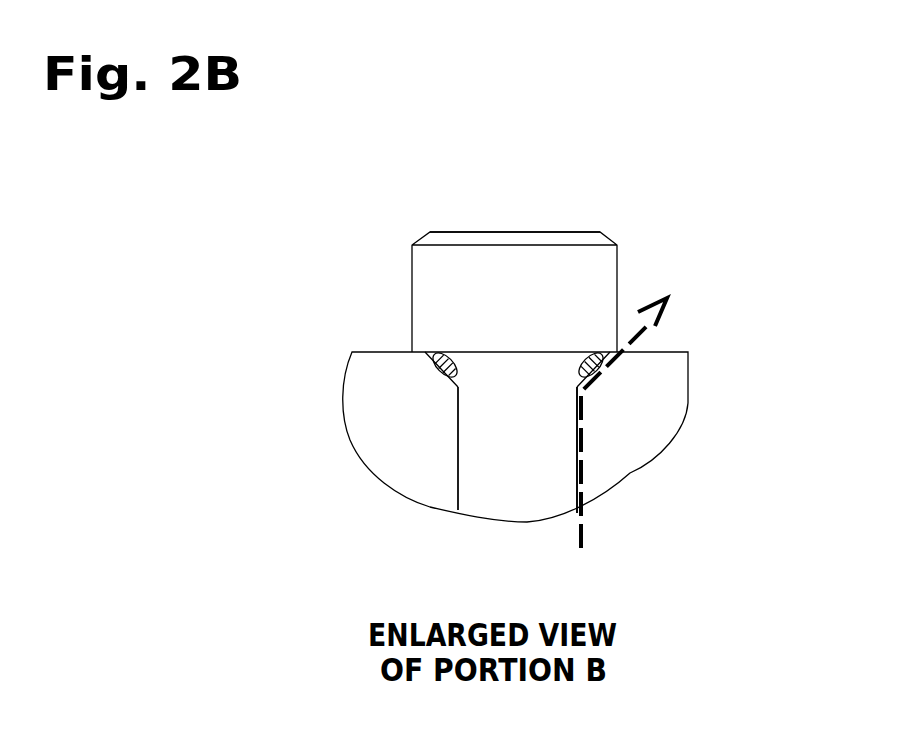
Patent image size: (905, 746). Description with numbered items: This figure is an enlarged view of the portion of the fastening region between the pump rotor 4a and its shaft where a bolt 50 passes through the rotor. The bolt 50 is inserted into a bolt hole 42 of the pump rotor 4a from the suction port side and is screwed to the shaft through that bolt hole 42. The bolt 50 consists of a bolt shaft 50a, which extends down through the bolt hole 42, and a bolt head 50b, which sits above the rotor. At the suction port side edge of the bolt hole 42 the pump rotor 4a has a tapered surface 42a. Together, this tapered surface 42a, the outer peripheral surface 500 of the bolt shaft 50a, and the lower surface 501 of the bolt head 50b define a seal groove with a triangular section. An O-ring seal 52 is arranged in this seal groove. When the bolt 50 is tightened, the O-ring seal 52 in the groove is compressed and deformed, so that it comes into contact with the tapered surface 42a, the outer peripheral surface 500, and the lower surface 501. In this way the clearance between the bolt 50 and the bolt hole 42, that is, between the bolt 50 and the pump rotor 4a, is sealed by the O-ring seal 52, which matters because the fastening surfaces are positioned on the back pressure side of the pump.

The bolt 50 is at (610, 133).
The bolt shaft 50a is at (528, 383).
The bolt head 50b is at (565, 275).
The pump rotor 4a is at (648, 412).
The tapered surface 42a is at (437, 352).
The O-ring seal 52 is at (443, 368).
The outer peripheral surface 500 is at (457, 460).
The lower surface 501 is at (595, 353).
The bolt hole 42 is at (580, 472).